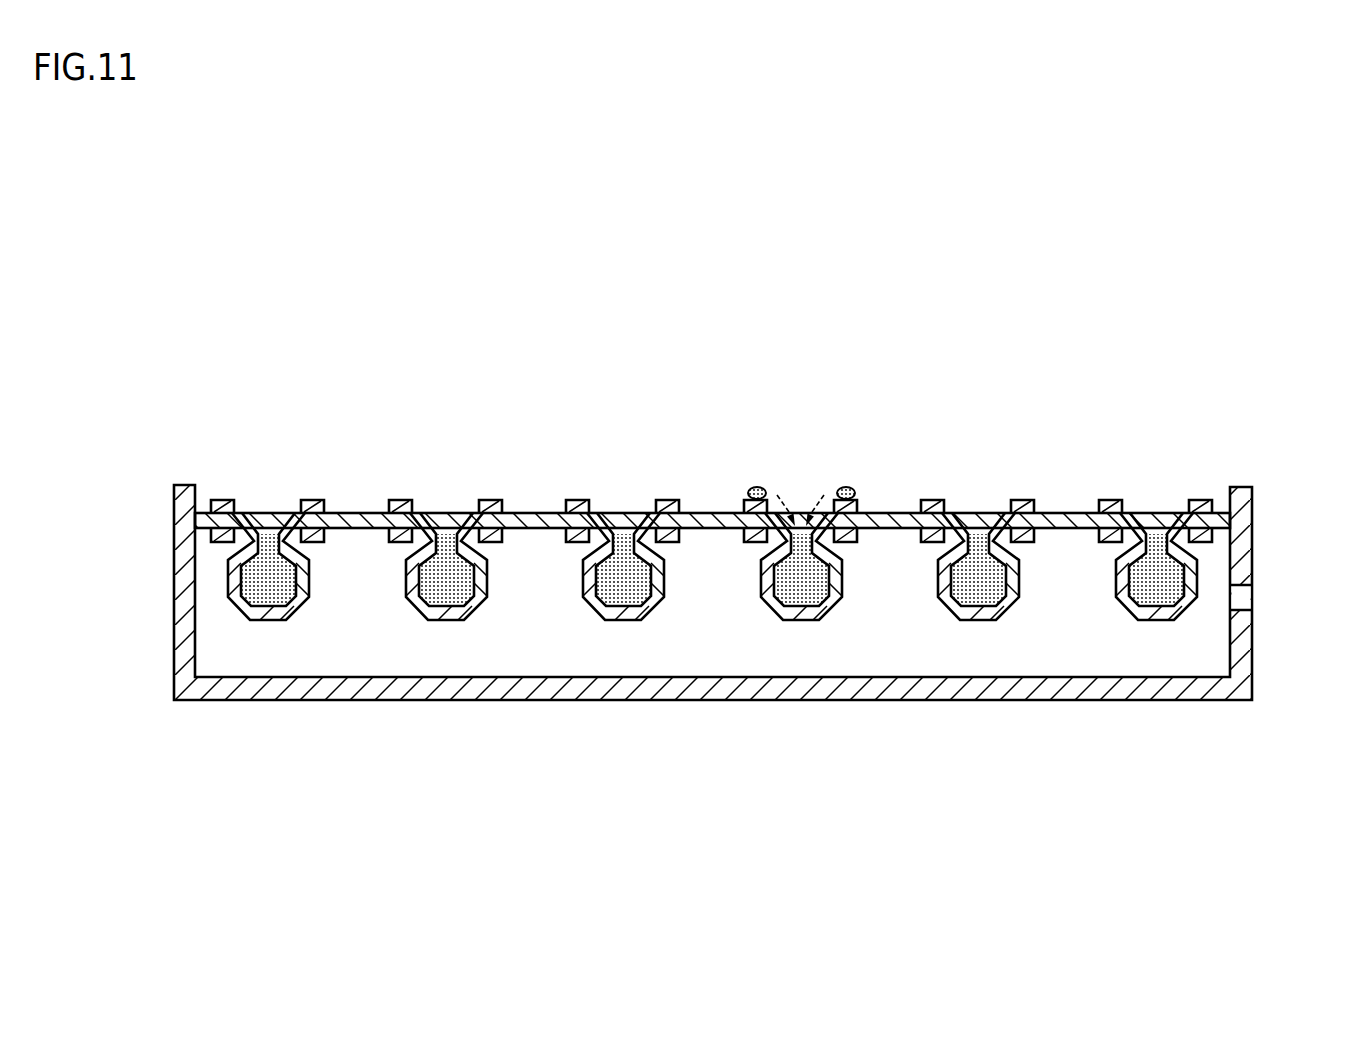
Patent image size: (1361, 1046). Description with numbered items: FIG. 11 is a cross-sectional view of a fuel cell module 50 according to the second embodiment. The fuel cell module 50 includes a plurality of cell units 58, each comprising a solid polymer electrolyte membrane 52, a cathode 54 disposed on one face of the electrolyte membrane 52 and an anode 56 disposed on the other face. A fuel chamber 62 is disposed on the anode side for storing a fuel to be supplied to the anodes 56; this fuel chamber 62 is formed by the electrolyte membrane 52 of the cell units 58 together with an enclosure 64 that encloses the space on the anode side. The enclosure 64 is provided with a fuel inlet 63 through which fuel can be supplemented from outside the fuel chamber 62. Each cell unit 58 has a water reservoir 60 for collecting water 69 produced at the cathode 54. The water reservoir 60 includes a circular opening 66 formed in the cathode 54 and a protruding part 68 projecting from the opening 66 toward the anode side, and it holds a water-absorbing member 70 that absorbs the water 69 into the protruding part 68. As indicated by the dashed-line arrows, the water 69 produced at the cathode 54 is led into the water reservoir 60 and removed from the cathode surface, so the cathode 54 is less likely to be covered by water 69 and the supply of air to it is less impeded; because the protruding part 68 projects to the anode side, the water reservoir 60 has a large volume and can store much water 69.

The fuel cell module 50 is at (1073, 366).
The solid polymer electrolyte membrane 52 is at (1218, 513).
The cathode 54 is at (1203, 500).
The anode 56 is at (1200, 543).
The cell unit 58 is at (1153, 501).
The water reservoir 60 is at (800, 501).
The fuel chamber 62 is at (700, 660).
The fuel inlet 63 is at (1252, 598).
The enclosure 64 is at (1252, 650).
The circular opening 66 is at (986, 525).
The protruding part 68 is at (1022, 620).
The water 69 is at (752, 487).
The water-absorbing member 70 is at (797, 603).